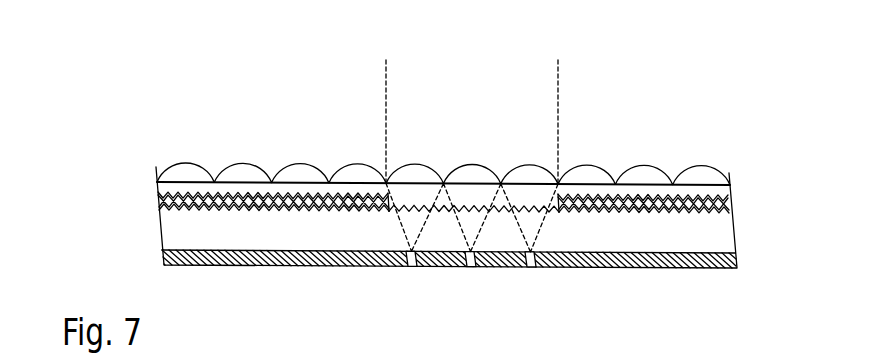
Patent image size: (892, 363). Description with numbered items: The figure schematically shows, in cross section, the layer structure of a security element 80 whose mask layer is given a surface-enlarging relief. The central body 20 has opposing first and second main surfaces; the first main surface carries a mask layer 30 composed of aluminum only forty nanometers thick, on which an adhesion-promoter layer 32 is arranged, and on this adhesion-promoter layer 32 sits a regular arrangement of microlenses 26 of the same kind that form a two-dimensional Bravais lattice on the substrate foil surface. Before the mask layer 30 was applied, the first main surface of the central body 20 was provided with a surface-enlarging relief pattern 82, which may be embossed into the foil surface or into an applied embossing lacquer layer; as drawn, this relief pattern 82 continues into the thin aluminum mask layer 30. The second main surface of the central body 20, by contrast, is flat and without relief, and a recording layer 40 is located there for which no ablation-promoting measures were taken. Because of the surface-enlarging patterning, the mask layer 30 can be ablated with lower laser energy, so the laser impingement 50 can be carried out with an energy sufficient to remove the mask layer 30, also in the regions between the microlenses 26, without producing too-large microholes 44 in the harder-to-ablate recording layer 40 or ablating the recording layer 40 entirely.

The security element 80 is at (118, 148).
The laser impingement 50 is at (478, 95).
The microlenses 26 is at (650, 177).
The adhesion-promoter layer 32 is at (725, 191).
The mask layer 30 is at (727, 207).
The central body 20 is at (727, 232).
The recording layer 40 is at (737, 258).
The microholes 44 is at (470, 268).
The surface-enlarging relief pattern 82 is at (612, 217).